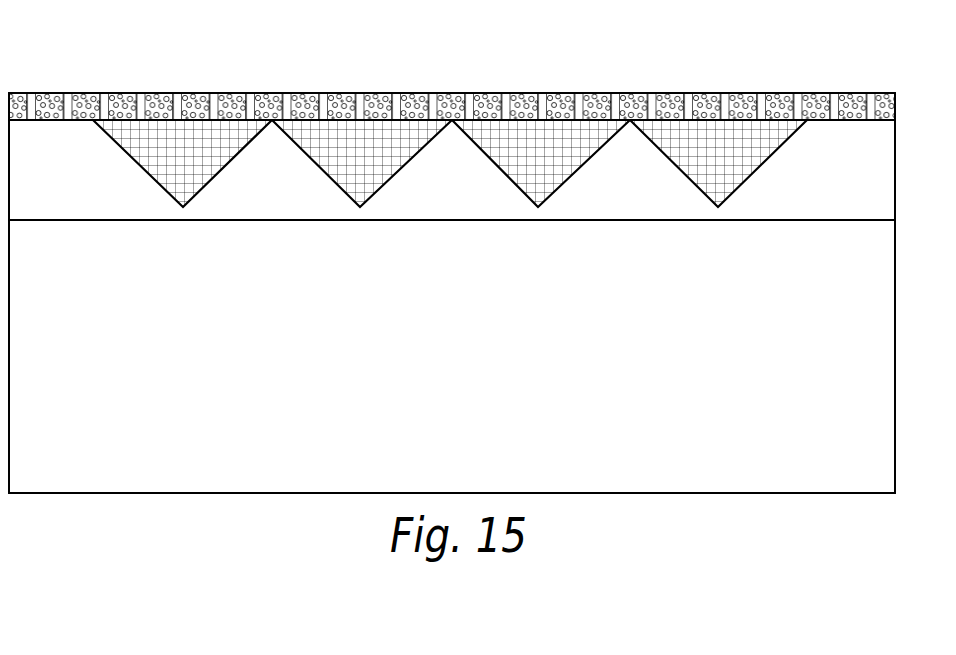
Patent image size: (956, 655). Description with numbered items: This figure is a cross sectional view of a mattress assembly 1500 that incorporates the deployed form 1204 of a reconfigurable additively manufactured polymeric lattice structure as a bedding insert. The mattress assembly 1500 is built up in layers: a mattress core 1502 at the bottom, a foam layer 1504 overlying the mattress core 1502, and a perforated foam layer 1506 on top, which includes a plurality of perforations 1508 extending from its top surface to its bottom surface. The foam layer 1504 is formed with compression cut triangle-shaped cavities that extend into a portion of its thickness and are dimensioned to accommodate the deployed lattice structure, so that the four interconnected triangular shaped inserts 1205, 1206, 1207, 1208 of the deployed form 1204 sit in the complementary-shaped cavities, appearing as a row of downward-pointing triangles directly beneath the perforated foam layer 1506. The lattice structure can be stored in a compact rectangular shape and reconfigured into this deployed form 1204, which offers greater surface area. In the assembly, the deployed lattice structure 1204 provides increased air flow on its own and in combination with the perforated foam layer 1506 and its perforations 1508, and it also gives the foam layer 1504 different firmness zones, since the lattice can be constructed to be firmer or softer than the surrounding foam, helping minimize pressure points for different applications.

The mattress assembly 1500 is at (154, 70).
The mattress core 1502 is at (490, 391).
The foam layer 1504 is at (90, 192).
The perforated foam layer 1506 is at (415, 100).
The perforations 1508 is at (871, 93).
The deployed shape 1204 is at (487, 202).
The first triangular shaped insert 1205 is at (178, 145).
The second triangular shaped insert 1206 is at (377, 168).
The third triangular shaped insert 1207 is at (535, 147).
The fourth triangular shaped insert 1208 is at (735, 167).